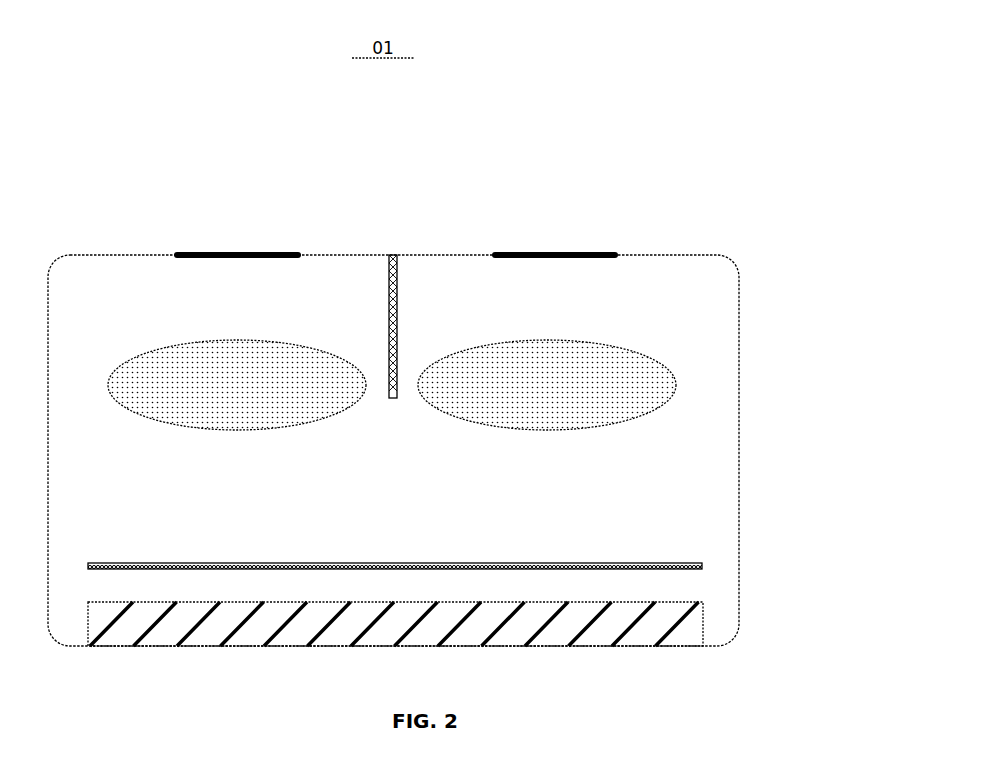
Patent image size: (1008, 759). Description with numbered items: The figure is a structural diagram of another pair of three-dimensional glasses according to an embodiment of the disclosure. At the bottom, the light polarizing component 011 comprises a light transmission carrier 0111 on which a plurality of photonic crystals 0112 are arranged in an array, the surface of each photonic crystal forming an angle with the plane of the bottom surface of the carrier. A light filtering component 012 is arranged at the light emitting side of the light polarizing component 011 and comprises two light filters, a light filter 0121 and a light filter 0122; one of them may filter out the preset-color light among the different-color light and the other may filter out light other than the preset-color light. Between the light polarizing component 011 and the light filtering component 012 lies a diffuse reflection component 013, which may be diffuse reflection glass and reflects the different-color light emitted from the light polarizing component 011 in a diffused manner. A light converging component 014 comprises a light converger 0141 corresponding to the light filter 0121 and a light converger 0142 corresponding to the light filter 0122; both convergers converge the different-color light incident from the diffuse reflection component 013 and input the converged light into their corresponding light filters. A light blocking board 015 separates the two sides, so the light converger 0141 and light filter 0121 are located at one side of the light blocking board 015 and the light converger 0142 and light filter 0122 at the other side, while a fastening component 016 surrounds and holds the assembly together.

The light polarizing component 011 is at (485, 625).
The light transmission carrier 0111 is at (705, 637).
The photonic crystals 0112 is at (697, 612).
The light filtering component 012 is at (396, 188).
The light filter 0121 is at (265, 252).
The light filter 0122 is at (525, 251).
The diffuse reflection component 013 is at (700, 563).
The light converging component 014 is at (496, 411).
The light converger 0141 is at (330, 413).
The light converger 0142 is at (657, 409).
The light blocking board 015 is at (394, 272).
The fastening component 016 is at (741, 322).